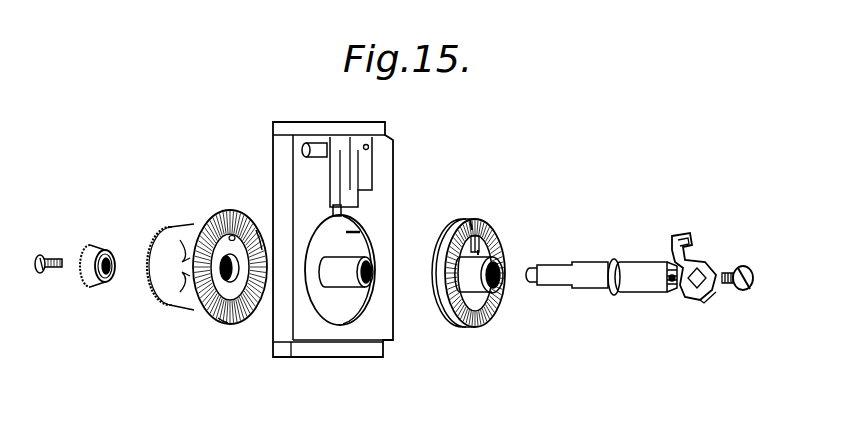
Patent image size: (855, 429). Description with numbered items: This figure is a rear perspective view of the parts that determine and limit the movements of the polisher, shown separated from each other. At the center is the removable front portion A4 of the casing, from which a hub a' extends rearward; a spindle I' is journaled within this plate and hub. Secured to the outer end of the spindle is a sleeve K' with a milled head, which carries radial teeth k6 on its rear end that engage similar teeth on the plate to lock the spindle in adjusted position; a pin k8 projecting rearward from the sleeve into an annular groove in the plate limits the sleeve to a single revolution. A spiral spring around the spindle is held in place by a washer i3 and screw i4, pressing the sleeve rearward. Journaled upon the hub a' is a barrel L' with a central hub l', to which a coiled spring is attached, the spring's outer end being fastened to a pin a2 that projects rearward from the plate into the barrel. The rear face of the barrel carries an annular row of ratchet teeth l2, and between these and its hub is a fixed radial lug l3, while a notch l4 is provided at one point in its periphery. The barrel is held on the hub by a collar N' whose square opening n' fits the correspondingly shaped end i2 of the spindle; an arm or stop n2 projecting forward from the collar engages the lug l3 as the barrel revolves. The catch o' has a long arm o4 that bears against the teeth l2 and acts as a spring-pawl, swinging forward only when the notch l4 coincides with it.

The removable front portion of the casing A4 is at (386, 203).
The catch o' is at (337, 156).
The long arm of the catch o4 is at (332, 212).
The hub a' is at (340, 270).
The pin a2 is at (360, 232).
The sleeve K' is at (207, 267).
The pin k8 is at (232, 236).
The radial teeth k6 is at (256, 228).
The washer i3 is at (104, 250).
The screw i4 is at (42, 264).
The barrel L' is at (468, 279).
The central hub of the barrel l' is at (477, 275).
The radial ratchet-teeth l2 is at (488, 238).
The fixed radial lug l3 is at (498, 252).
The notch l4 is at (472, 224).
The spindle I' is at (601, 277).
The projecting end of the spindle i2 is at (671, 292).
The square axial opening n' is at (700, 272).
The arm or stop n2 is at (688, 242).
The collar N' is at (728, 268).